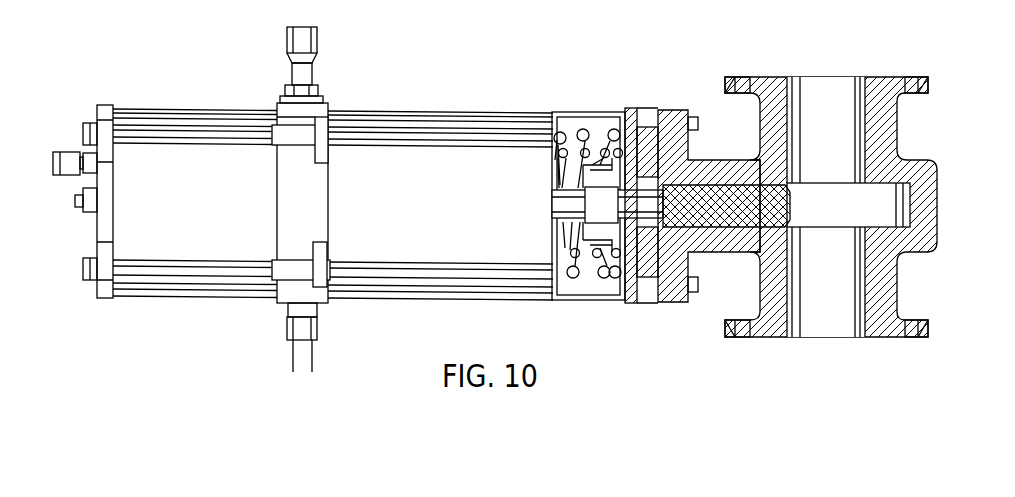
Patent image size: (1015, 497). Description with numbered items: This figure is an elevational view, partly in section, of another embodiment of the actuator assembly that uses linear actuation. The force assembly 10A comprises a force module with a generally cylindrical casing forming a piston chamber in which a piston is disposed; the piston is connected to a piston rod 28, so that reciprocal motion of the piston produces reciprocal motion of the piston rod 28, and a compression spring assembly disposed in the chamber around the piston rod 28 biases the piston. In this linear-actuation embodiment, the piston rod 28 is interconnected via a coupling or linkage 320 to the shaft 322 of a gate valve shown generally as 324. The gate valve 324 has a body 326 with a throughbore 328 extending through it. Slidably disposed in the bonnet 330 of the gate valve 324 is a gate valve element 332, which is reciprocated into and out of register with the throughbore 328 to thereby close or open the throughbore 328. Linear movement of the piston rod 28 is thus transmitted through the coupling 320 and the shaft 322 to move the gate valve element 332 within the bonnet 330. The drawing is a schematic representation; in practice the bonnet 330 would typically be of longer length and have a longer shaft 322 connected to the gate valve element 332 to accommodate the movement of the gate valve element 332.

The force assembly 10A is at (387, 93).
The piston rod 28 is at (562, 207).
The coupling or linkage 320 is at (603, 207).
The shaft 322 is at (643, 198).
The gate valve 324 is at (943, 147).
The body 326 is at (880, 87).
The throughbore 328 is at (830, 90).
The bonnet 330 is at (725, 242).
The gate valve element 332 is at (768, 217).